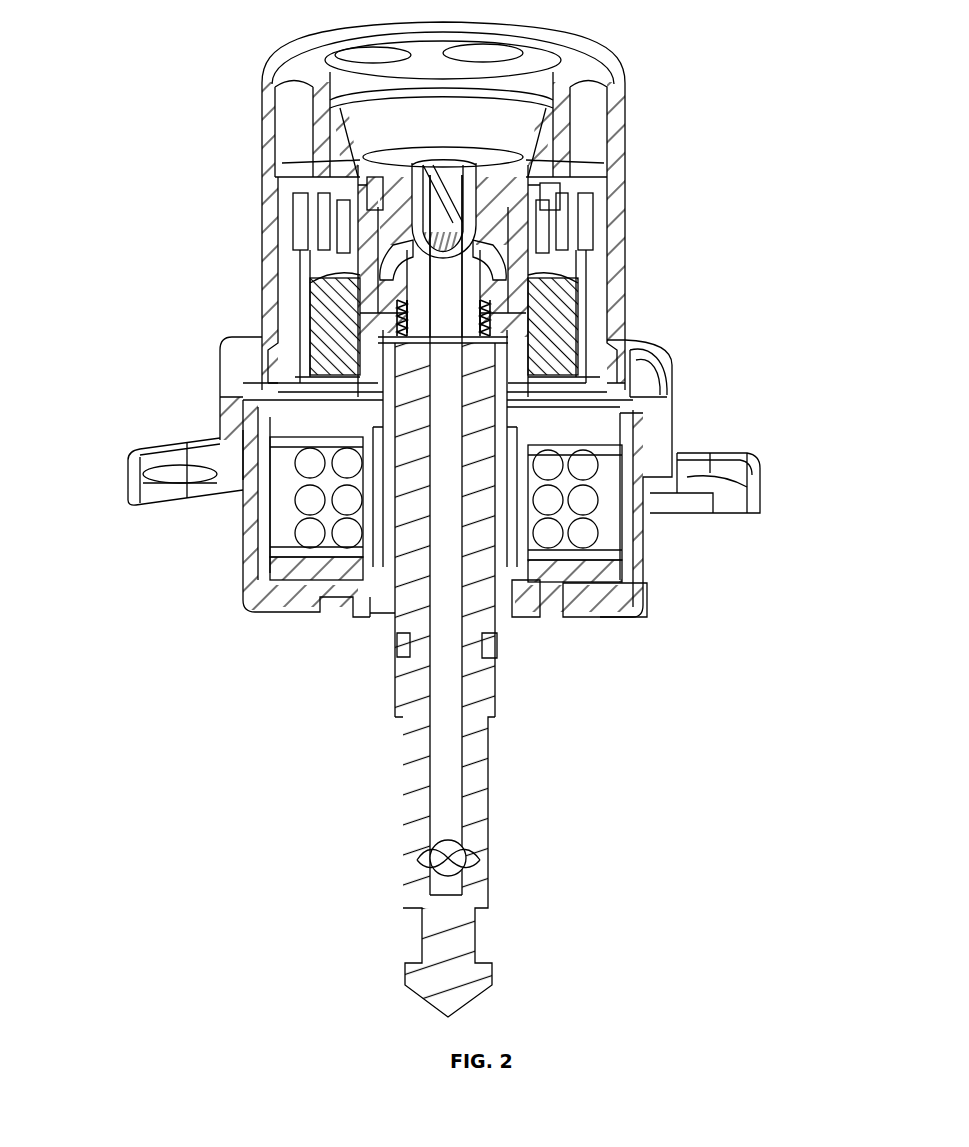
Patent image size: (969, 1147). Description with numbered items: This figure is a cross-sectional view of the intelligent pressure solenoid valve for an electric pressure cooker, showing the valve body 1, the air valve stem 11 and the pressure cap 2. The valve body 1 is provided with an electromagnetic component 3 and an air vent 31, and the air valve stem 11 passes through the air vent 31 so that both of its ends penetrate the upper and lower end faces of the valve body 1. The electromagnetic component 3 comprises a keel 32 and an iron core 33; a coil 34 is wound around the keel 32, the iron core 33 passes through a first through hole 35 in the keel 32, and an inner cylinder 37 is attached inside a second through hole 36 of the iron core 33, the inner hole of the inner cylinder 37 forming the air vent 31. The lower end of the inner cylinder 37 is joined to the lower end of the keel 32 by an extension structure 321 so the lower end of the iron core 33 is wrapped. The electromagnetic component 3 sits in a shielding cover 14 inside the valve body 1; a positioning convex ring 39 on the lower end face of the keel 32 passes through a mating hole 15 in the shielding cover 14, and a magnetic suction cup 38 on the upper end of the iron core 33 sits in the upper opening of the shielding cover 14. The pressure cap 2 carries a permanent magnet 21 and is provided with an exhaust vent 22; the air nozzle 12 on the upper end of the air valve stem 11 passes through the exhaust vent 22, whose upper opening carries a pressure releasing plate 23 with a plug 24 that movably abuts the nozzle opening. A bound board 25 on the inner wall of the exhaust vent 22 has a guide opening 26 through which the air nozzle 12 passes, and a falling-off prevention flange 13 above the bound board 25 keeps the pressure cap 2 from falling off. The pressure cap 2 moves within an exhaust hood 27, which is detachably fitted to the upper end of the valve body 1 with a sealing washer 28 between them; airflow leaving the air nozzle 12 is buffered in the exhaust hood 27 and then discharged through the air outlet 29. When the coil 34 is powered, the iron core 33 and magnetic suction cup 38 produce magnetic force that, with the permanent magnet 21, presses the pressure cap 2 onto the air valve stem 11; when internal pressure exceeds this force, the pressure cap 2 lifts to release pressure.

The valve body 1 is at (637, 606).
The pressure cap 2 is at (573, 168).
The electromagnetic component 3 is at (280, 532).
The air valve stem 11 is at (497, 712).
The air nozzle 12 is at (485, 292).
The falling-off prevention flange 13 is at (490, 248).
The shielding cover 14 is at (640, 446).
The mating hole 15 is at (395, 584).
The permanent magnet 21 is at (600, 352).
The exhaust vent 22 is at (395, 226).
The pressure releasing plate 23 is at (335, 165).
The plug 24 is at (560, 207).
The bound board 25 is at (500, 318).
The guide opening 26 is at (400, 312).
The exhaust hood 27 is at (610, 110).
The sealing washer 28 is at (330, 386).
The air outlet 29 is at (600, 56).
The air vent 31 is at (250, 431).
The keel 32 is at (540, 573).
The iron core 33 is at (700, 478).
The coil 34 is at (585, 535).
The first through hole 35 is at (305, 503).
The second through hole 36 is at (305, 464).
The inner cylinder 37 is at (720, 498).
The magnetic suction cup 38 is at (620, 412).
The positioning convex ring 39 is at (620, 587).
The extension structure 321 is at (385, 640).